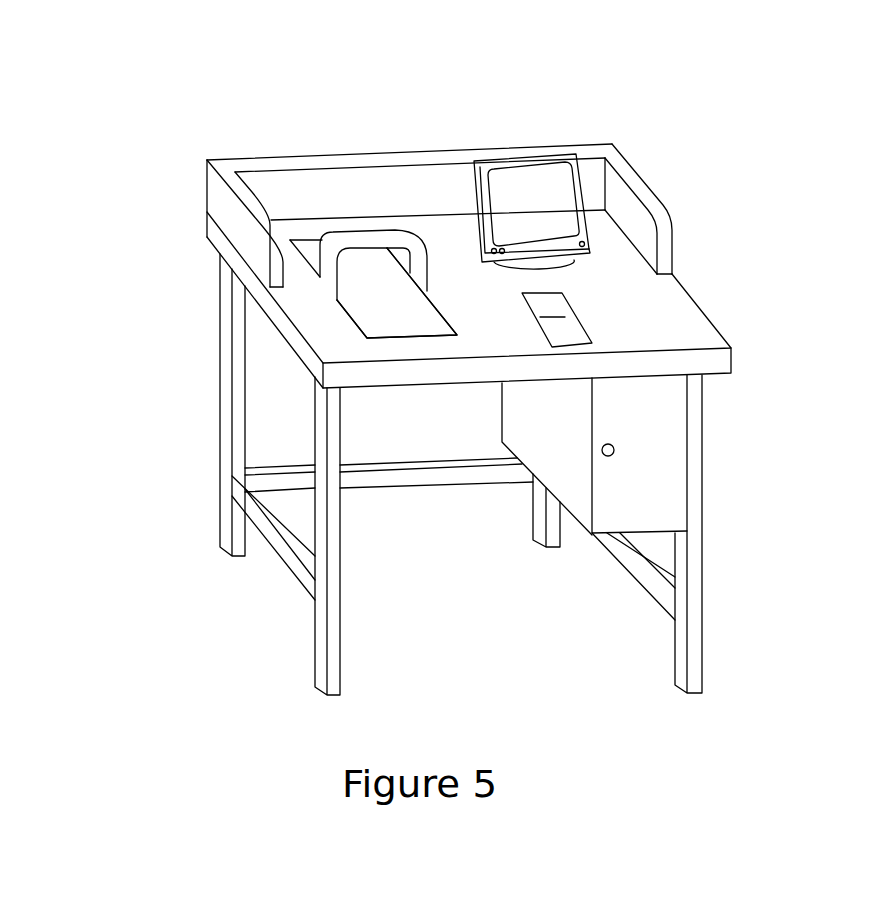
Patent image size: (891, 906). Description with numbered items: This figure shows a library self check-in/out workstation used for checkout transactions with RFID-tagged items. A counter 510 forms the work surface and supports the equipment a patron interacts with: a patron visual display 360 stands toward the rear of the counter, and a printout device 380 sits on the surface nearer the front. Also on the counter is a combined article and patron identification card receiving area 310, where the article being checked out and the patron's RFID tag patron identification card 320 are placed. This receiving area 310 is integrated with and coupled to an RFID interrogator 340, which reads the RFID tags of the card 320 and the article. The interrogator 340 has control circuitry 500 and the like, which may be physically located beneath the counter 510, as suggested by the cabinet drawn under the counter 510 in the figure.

The combined article and patron identification card receiving area 310 is at (310, 310).
The RFID tag patron identification card 320 is at (403, 227).
The RFID interrogator 340 is at (397, 293).
The patron visual display 360 is at (568, 157).
The printout device 380 is at (575, 332).
The control circuitry 500 is at (667, 477).
The counter 510 is at (692, 338).